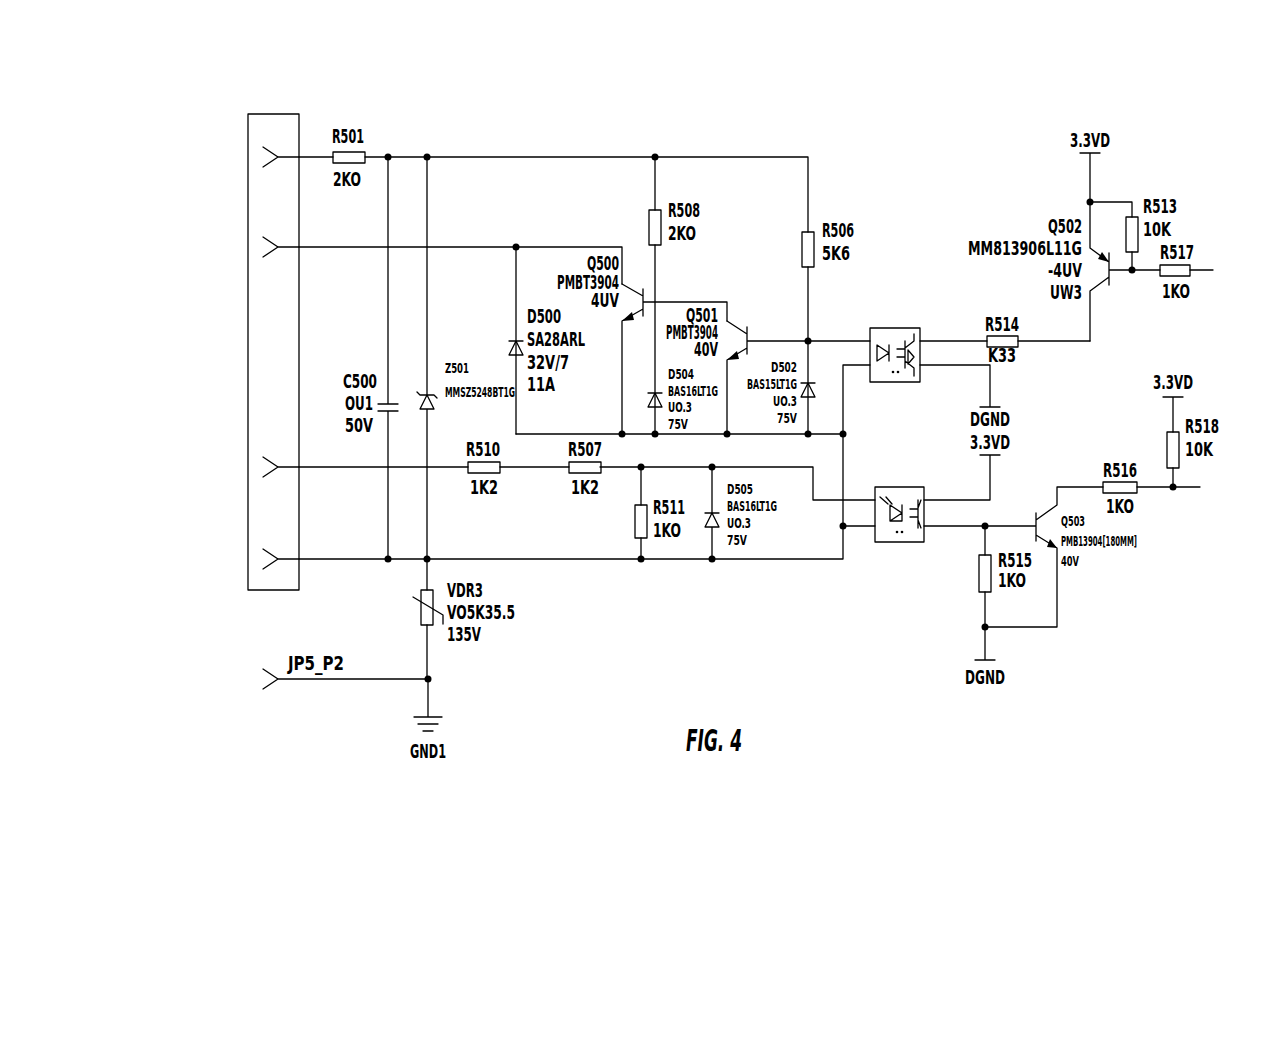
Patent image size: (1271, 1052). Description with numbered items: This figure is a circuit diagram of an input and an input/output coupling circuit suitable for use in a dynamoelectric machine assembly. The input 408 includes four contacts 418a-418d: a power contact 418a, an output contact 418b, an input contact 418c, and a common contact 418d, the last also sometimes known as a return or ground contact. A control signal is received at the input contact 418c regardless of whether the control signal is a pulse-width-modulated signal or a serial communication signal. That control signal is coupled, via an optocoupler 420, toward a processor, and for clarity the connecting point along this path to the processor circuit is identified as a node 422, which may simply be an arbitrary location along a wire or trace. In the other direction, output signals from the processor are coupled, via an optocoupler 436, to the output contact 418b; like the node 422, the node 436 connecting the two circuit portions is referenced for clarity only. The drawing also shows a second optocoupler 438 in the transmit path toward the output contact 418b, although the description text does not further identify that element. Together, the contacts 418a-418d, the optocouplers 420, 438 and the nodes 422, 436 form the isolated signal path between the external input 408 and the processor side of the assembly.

The input 408 is at (288, 113).
The power contact 418a is at (266, 152).
The output contact 418b is at (266, 243).
The input contact 418c is at (266, 463).
The common contact 418d is at (266, 556).
The optocoupler IC501 438 is at (917, 292).
The optocoupler 436 is at (1218, 264).
The optocoupler 420 is at (899, 545).
The node 422 is at (1235, 503).